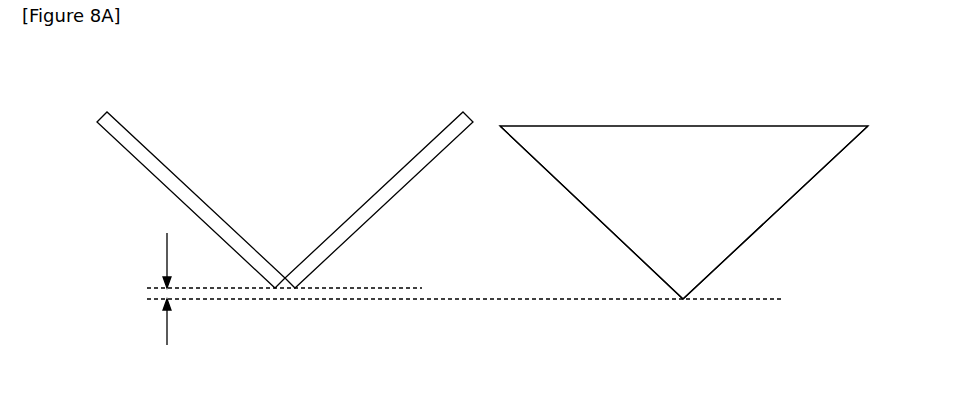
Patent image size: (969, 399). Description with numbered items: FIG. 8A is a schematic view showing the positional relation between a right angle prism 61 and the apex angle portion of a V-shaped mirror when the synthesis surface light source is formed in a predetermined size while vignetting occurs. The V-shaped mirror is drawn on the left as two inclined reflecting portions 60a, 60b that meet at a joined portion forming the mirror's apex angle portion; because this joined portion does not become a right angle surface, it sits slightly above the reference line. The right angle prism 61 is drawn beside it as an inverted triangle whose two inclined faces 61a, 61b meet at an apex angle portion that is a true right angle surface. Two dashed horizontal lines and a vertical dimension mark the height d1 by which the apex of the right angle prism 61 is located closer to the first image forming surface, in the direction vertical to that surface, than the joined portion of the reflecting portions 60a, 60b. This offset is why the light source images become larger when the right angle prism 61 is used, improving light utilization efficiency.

The reflecting portion 60a is at (465, 111).
The reflecting portion 60b is at (104, 110).
The right angle prism 61 is at (686, 186).
The first prism surface 61a is at (790, 200).
The second prism surface 61b is at (587, 209).
The height d1 is at (145, 289).